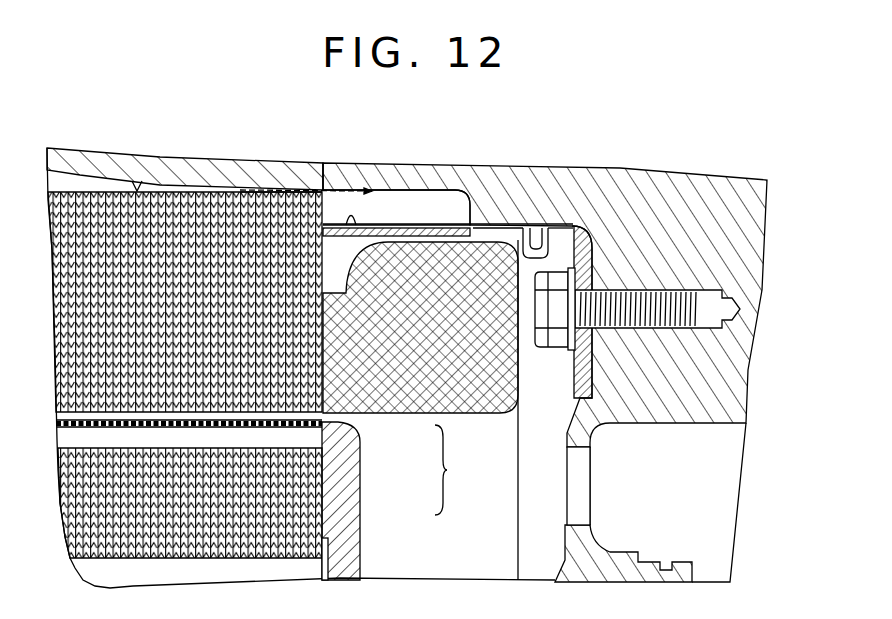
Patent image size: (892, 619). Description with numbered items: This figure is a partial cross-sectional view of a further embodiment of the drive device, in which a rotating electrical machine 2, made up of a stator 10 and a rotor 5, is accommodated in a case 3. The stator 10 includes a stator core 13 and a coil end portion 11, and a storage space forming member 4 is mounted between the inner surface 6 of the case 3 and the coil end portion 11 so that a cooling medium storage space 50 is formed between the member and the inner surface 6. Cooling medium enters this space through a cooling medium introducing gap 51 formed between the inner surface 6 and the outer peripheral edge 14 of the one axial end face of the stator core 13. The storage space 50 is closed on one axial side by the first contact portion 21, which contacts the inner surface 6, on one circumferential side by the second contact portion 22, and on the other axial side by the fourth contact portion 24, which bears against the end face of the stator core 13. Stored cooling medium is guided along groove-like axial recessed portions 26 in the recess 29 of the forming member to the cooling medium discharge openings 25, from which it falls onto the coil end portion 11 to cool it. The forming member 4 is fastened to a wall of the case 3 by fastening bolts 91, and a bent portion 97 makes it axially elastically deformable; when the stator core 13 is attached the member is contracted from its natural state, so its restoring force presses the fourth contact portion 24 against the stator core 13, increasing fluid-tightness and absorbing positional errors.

The rotating electrical machine 2 is at (451, 470).
The case 3 is at (652, 172).
The storage space forming member 4 is at (567, 222).
The rotor 5 is at (367, 505).
The inner surface 6 is at (131, 180).
The stator 10 is at (372, 420).
The coil end portion 11 is at (465, 413).
The stator core 13 is at (78, 192).
The outer peripheral edge 14 is at (332, 190).
The first contact portion 21 is at (513, 226).
The second contact portion 22 is at (392, 200).
The fourth contact portion 24 is at (282, 202).
The cooling medium discharge openings 25 is at (445, 232).
The axial recessed portions 26 is at (350, 226).
The recess 29 is at (487, 226).
The cooling medium storage space 50 is at (382, 203).
The cooling medium introducing gap 51 is at (240, 188).
The fastening bolts 91 is at (657, 335).
The bent portion 97 is at (552, 348).